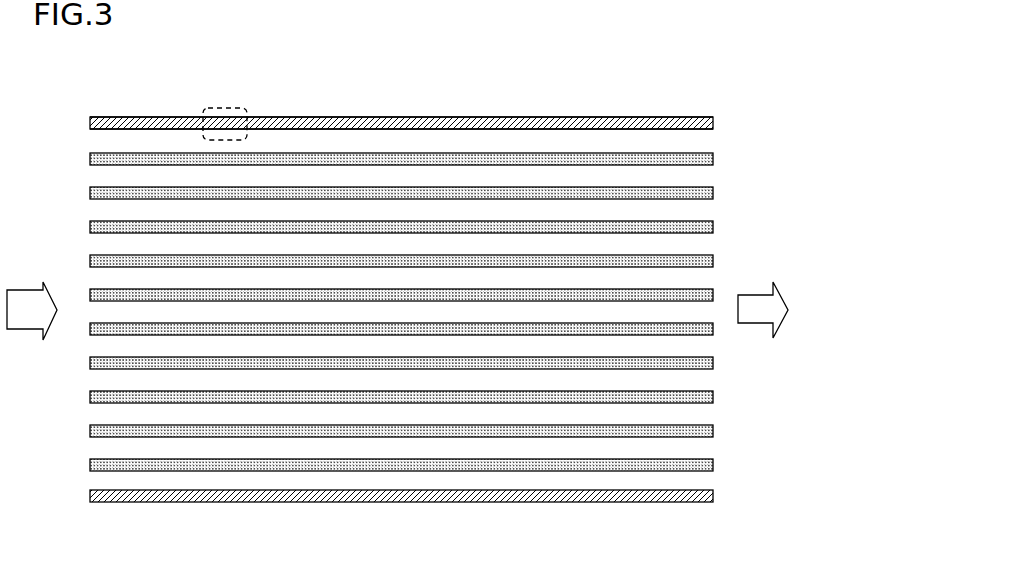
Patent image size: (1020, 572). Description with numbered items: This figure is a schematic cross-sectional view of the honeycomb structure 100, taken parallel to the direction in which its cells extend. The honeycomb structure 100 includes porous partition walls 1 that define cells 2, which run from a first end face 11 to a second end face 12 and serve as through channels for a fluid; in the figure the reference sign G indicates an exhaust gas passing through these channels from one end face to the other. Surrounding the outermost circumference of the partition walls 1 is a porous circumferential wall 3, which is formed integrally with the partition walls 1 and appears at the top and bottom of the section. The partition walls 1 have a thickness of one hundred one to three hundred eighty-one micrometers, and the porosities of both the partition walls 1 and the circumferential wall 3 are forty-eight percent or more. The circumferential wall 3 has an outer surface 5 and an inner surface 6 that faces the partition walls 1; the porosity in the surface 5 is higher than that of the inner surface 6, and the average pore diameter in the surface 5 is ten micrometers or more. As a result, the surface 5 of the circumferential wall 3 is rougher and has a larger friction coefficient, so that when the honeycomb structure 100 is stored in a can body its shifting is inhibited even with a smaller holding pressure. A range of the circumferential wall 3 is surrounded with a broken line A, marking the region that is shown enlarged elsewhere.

The honeycomb structure 100 is at (707, 34).
The partition walls 1 is at (432, 160).
The cells 2 is at (105, 210).
The circumferential wall 3 is at (494, 117).
The surface of the circumferential wall 5 is at (145, 117).
The inner surface of the circumferential wall 6 is at (142, 131).
The broken line A is at (232, 108).
The first end face 11 is at (76, 489).
The second end face 12 is at (730, 483).
The exhaust gas G is at (397, 300).